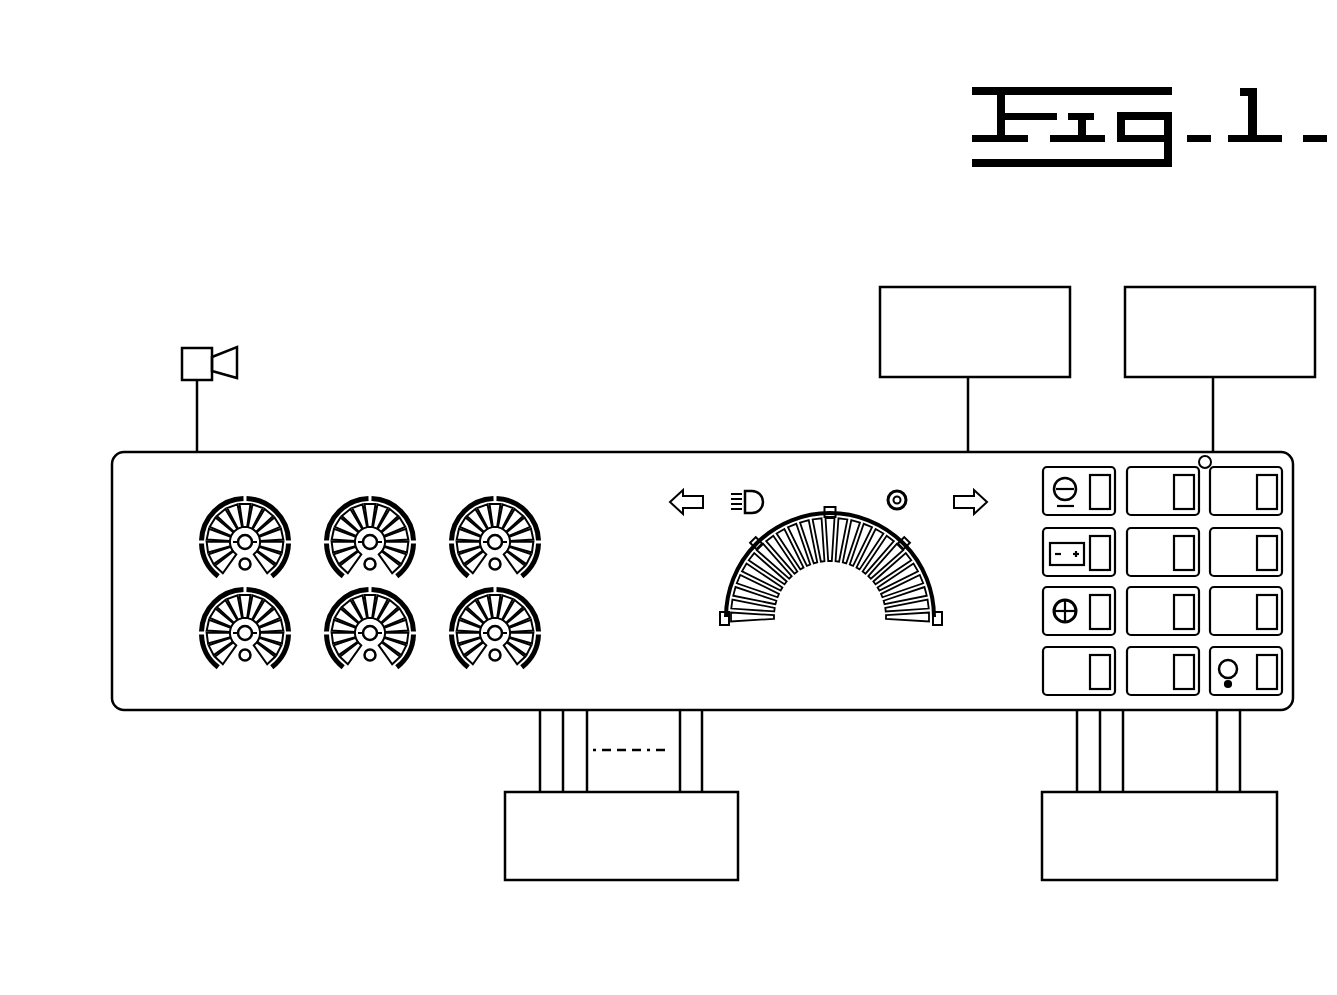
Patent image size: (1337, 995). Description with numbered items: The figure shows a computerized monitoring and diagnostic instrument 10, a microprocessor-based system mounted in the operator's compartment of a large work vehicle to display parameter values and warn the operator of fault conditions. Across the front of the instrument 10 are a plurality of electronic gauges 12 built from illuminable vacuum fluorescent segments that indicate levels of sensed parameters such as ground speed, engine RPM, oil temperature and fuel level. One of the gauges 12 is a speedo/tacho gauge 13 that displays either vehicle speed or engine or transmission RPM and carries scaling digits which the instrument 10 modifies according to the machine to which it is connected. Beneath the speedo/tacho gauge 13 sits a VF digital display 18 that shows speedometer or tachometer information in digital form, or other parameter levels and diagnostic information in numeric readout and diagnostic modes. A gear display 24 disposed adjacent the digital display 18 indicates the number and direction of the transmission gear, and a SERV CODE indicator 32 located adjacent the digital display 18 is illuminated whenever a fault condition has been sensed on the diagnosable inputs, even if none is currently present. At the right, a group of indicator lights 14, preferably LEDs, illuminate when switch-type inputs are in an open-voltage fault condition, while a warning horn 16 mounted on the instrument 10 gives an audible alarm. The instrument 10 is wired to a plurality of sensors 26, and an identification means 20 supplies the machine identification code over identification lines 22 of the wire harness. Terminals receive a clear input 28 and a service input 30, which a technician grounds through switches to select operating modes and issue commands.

The instrument 10 is at (544, 415).
The electronic gauges 12 is at (324, 467).
The speedo/tacho gauge 13 is at (693, 559).
The indicator lights 14 is at (1262, 446).
The warning horn 16 is at (197, 348).
The VF digital display 18 is at (834, 692).
The identification means 20 is at (655, 880).
The identification lines 22 is at (422, 776).
The gear display 24 is at (795, 623).
The sensors 26 is at (1120, 880).
The clear input 28 is at (1175, 287).
The service input 30 is at (952, 287).
The SERV CODE indicator 32 is at (777, 678).